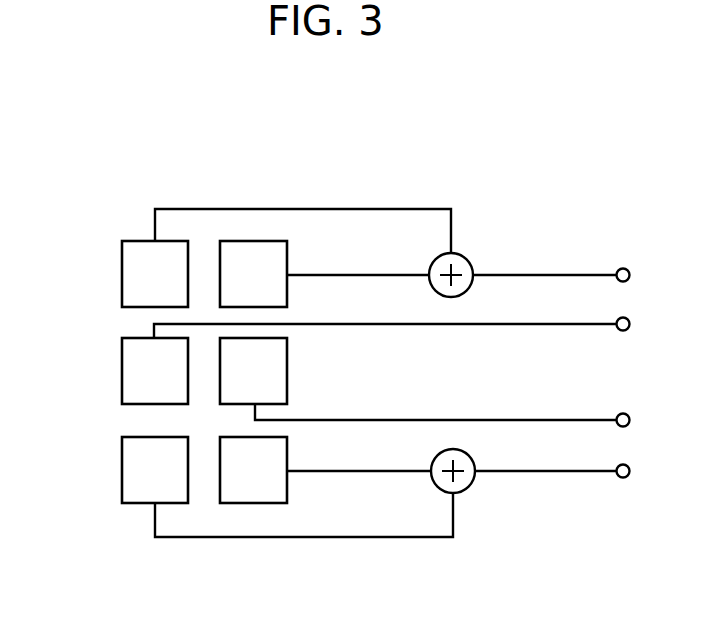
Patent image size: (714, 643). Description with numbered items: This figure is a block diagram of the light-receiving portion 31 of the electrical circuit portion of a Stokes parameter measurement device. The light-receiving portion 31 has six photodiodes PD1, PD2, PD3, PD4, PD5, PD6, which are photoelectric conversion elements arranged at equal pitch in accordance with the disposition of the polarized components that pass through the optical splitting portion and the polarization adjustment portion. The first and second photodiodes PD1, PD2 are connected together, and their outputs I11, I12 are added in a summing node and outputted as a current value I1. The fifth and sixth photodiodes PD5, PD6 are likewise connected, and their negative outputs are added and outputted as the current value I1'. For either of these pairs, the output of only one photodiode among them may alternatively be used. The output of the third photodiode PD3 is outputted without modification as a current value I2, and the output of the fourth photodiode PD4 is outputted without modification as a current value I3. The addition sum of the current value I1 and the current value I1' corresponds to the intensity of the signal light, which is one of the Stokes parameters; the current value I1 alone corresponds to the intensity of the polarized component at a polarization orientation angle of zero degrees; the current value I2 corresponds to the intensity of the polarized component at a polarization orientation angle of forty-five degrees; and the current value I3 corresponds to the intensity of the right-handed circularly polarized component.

The light-receiving portion 31 is at (605, 151).
The first photodiode PD1 is at (141, 241).
The second photodiode PD2 is at (256, 241).
The third photodiode PD3 is at (122, 370).
The fourth photodiode PD4 is at (288, 370).
The fifth photodiode PD5 is at (141, 503).
The sixth photodiode PD6 is at (256, 503).
The output of first photodiode I11 is at (303, 214).
The output of second photodiode I12 is at (358, 260).
The current value I1 is at (566, 277).
The current value I2 is at (406, 316).
The current value I3 is at (457, 412).
The current value I1' is at (567, 472).